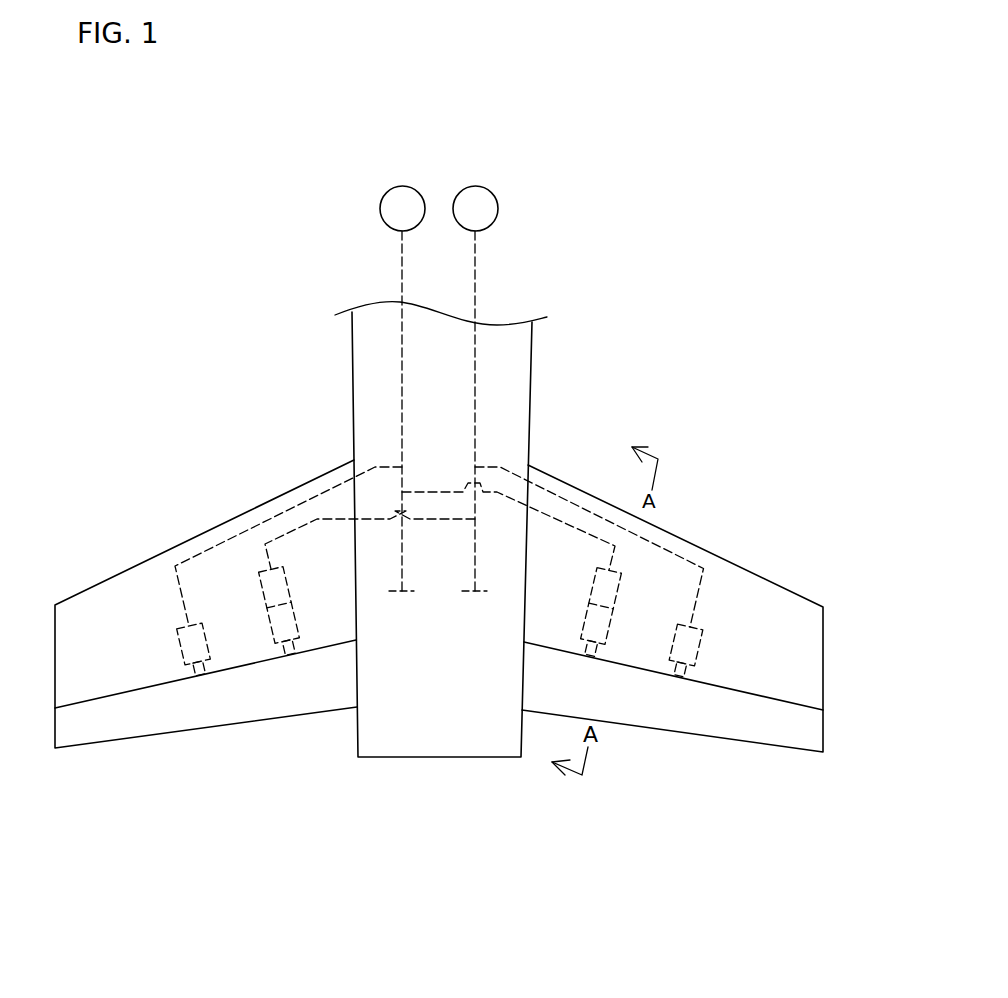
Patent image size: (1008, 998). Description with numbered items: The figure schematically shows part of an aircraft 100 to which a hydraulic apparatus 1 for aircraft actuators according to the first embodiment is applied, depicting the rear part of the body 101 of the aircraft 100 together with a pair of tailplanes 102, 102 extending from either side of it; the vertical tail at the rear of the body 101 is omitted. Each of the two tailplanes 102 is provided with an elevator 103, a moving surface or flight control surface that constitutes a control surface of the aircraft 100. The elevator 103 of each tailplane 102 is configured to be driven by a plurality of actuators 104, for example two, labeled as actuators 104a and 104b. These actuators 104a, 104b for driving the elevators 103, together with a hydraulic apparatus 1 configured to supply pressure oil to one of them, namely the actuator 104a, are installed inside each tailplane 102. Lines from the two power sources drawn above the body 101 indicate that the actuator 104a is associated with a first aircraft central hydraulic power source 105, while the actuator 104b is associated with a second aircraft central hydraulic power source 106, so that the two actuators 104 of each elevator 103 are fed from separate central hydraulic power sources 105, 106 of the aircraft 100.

The hydraulic apparatus 1 is at (265, 589).
The aircraft 100 is at (548, 360).
The body 101 is at (513, 418).
The tailplane 102 is at (150, 590).
The elevator 103 is at (178, 717).
The actuator 104 is at (435, 559).
The actuator 104a is at (273, 632).
The actuator 104b is at (760, 429).
The first aircraft central hydraulic power source 105 is at (380, 210).
The second aircraft central hydraulic power source 106 is at (498, 200).